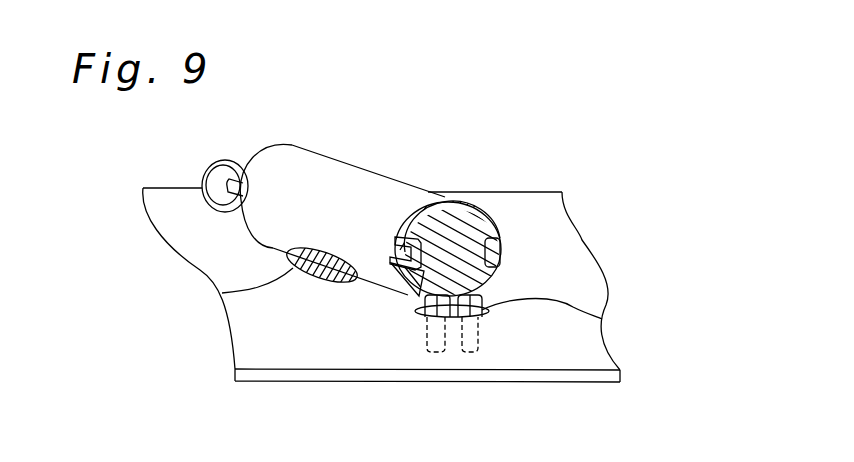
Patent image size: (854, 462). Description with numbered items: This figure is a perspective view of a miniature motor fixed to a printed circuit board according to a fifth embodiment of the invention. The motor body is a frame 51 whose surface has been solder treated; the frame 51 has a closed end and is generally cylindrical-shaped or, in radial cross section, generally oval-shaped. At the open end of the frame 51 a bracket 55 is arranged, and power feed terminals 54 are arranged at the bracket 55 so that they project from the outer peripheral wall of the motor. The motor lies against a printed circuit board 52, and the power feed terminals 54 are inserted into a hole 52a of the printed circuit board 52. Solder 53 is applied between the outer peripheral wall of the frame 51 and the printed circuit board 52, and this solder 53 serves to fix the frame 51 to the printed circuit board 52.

The frame 51 is at (355, 180).
The printed circuit board 52 is at (513, 212).
The hole 52a is at (603, 320).
The solder 53 is at (222, 293).
The power feed terminals 54 is at (440, 318).
The bracket 55 is at (483, 265).